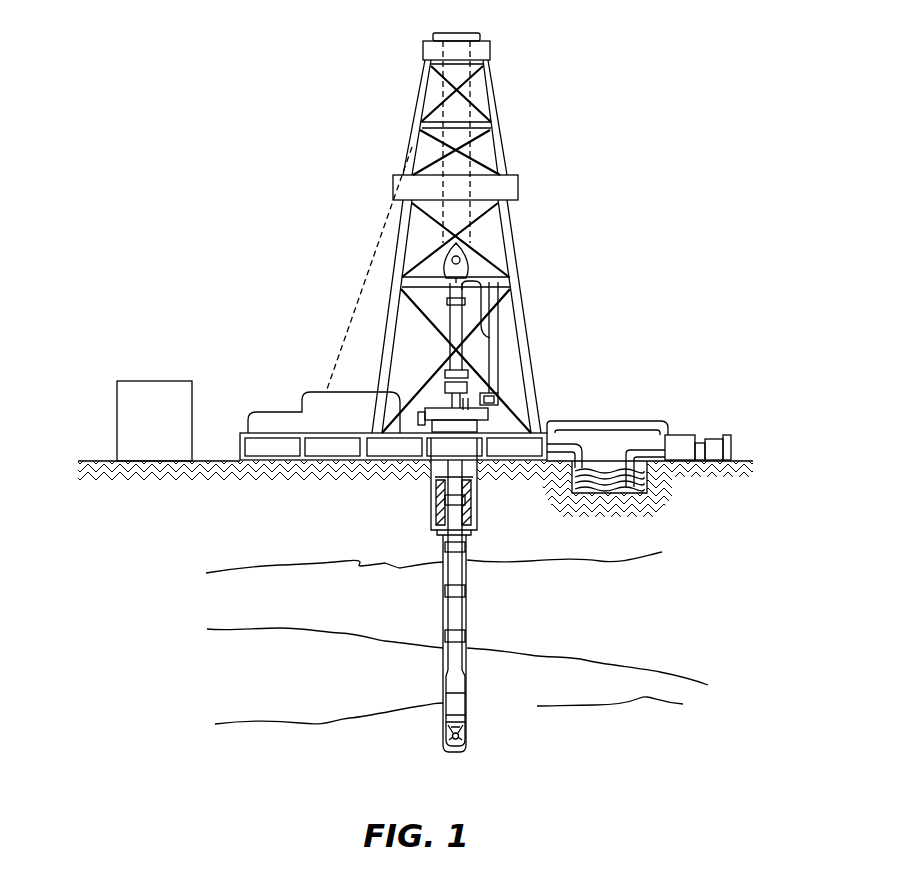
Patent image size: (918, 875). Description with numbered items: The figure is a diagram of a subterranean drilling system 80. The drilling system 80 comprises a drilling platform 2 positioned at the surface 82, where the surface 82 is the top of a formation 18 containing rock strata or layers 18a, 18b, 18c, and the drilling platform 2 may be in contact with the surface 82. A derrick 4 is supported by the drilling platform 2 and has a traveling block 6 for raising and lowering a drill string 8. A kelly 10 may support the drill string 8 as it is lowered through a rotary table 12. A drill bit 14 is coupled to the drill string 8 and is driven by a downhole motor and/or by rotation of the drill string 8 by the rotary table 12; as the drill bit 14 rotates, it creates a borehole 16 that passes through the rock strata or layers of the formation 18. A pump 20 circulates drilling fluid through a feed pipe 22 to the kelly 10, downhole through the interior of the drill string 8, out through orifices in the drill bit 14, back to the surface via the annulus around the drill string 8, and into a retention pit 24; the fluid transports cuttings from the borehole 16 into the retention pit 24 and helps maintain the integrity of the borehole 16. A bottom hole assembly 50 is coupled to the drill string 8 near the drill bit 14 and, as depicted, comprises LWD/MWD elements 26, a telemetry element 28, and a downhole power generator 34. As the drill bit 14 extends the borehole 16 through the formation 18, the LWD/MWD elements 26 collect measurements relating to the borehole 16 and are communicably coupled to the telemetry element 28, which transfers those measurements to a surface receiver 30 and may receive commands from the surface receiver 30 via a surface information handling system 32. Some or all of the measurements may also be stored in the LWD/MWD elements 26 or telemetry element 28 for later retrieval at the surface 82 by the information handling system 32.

The drilling platform 2 is at (240, 446).
The derrick 4 is at (488, 120).
The traveling block 6 is at (461, 261).
The drill string 8 is at (460, 572).
The kelly 10 is at (456, 345).
The rotary table 12 is at (500, 408).
The drill bit 14 is at (452, 747).
The borehole 16 is at (467, 594).
The formation 18 is at (189, 518).
The rock stratum 18a is at (213, 670).
The rock stratum 18b is at (214, 610).
The rock stratum 18c is at (638, 550).
The pump 20 is at (680, 436).
The feed pipe 22 is at (604, 421).
The retention pit 24 is at (577, 494).
The LWD/MWD elements 26 is at (458, 719).
The telemetry element 28 is at (456, 686).
The surface receiver 30 is at (482, 396).
The surface information handling system 32 is at (167, 433).
The downhole power generator 34 is at (456, 701).
The bottom hole assembly 50 is at (426, 694).
The subterranean drilling system 80 is at (535, 157).
The surface 82 is at (96, 461).